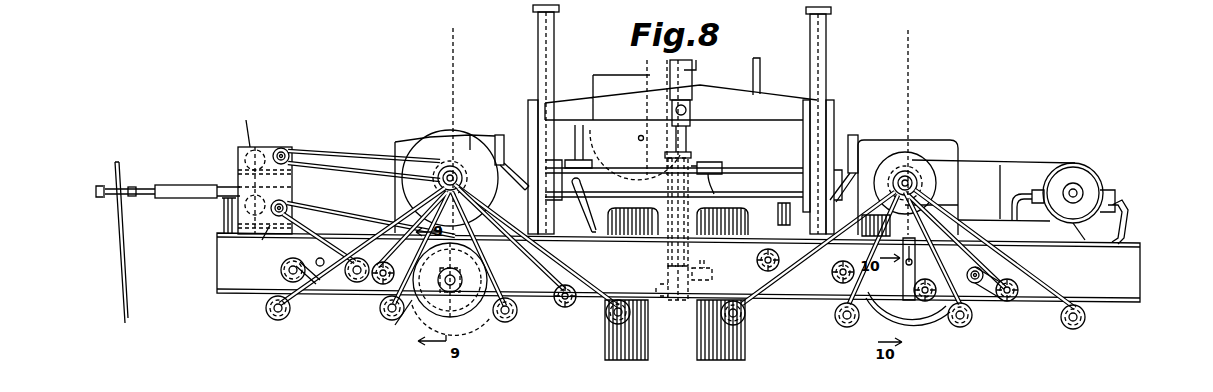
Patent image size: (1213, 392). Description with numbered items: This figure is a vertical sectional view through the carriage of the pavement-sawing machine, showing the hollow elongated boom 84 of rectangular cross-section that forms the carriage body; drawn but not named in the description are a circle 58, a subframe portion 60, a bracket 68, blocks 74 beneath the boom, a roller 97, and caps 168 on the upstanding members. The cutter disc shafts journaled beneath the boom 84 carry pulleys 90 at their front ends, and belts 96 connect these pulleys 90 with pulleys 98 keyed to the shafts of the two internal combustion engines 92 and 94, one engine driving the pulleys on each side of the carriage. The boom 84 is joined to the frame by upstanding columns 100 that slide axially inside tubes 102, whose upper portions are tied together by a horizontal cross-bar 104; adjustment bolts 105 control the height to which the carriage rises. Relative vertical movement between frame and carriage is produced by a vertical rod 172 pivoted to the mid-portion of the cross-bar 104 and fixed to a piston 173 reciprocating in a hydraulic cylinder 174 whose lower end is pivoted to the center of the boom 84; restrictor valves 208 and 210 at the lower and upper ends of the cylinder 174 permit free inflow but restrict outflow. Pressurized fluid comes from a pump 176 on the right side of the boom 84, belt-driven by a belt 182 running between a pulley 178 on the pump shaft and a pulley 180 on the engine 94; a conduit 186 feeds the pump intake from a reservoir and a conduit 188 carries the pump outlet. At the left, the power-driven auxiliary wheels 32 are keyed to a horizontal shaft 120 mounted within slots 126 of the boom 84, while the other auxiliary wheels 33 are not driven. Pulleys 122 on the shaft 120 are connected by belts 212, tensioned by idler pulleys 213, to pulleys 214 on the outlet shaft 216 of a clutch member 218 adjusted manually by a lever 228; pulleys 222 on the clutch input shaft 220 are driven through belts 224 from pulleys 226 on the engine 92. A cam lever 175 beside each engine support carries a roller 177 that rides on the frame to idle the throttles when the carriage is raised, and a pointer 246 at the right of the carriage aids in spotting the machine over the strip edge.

The auxiliary wheels 32 is at (395, 330).
The auxiliary wheels 33 is at (910, 332).
The pivot circle 58 is at (640, 141).
The subframe 60 is at (608, 82).
The bracket 68 is at (686, 72).
The cleat blocks 74 is at (655, 320).
The boom 84 is at (1142, 256).
The pulleys 90 is at (278, 321).
The internal combustion engine 92 is at (400, 138).
The internal combustion engine 94 is at (958, 144).
The belts 96 is at (383, 262).
The idler rollers 97 is at (282, 272).
The pulleys 98 is at (463, 158).
The columns 100 is at (540, 54).
The tubes 102 is at (548, 120).
The cross-bar 104 is at (773, 98).
The adjustment bolts 105 is at (522, 240).
The shaft 120 is at (490, 222).
The pulleys 122 is at (462, 304).
The slots 126 is at (410, 355).
The post cap 168 is at (533, 9).
The vertical rod 172 is at (692, 110).
The piston 173 is at (658, 288).
The hydraulic cylinder 174 is at (658, 232).
The cam lever 175 is at (505, 145).
The pump 176 is at (1108, 205).
The roller 177 is at (556, 188).
The pulley 178 is at (1088, 168).
The pulley 180 is at (915, 150).
The belt 182 is at (992, 159).
The conduit 186 is at (1125, 225).
The conduit 188 is at (1010, 200).
The restrictor valve 208 is at (716, 272).
The restrictor valve 210 is at (720, 156).
The belts 212 is at (345, 217).
The idler pulleys 213 is at (340, 240).
The pulleys 214 is at (270, 225).
The outlet shaft 216 is at (288, 205).
The clutch member 218 is at (230, 167).
The input shaft 220 is at (286, 149).
The pulleys 222 is at (290, 158).
The belts 224 is at (330, 152).
The pulleys 226 is at (450, 132).
The lever 228 is at (246, 120).
The pointer 246 is at (180, 181).